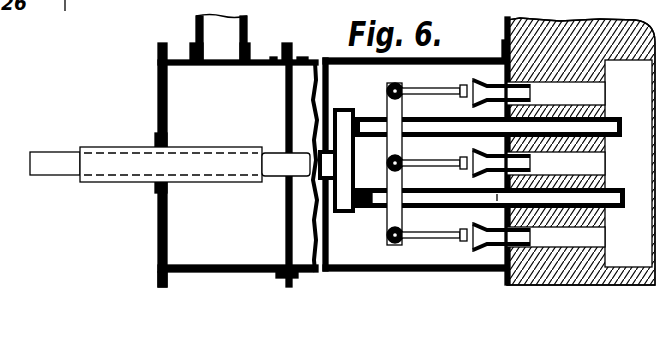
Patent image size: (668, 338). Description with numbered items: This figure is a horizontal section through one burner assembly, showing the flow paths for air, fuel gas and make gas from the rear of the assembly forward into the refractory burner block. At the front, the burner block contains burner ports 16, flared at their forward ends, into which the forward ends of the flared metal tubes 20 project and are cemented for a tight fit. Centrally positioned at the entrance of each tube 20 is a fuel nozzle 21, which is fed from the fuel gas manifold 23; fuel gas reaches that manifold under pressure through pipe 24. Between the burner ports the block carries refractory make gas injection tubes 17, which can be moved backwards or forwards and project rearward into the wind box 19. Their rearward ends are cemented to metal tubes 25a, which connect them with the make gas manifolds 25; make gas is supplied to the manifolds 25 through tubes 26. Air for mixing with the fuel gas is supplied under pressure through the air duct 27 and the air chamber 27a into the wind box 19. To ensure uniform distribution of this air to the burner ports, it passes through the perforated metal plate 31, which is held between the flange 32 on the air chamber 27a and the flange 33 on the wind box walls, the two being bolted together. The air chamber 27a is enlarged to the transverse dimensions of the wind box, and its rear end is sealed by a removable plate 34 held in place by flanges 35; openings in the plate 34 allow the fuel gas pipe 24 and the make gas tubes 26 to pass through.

The burner ports 16 is at (603, 92).
The make gas injection tubes 17 is at (625, 123).
The wind box 19 is at (401, 258).
The tubes 20 is at (480, 250).
The fuel nozzle 21 is at (470, 78).
The fuel gas manifold 23 is at (391, 87).
The fuel gas pipe 24 is at (194, 160).
The make gas manifolds 25 is at (352, 108).
The metal tubes 25a is at (418, 197).
The make gas tubes 26 is at (102, 180).
The air duct 27 is at (207, 32).
The air chamber 27a is at (261, 262).
The perforated metal plate 31 is at (288, 98).
The flange 32 is at (286, 51).
The flange 33 is at (297, 58).
The removable plate 34 is at (163, 101).
The flanges 35 is at (170, 273).